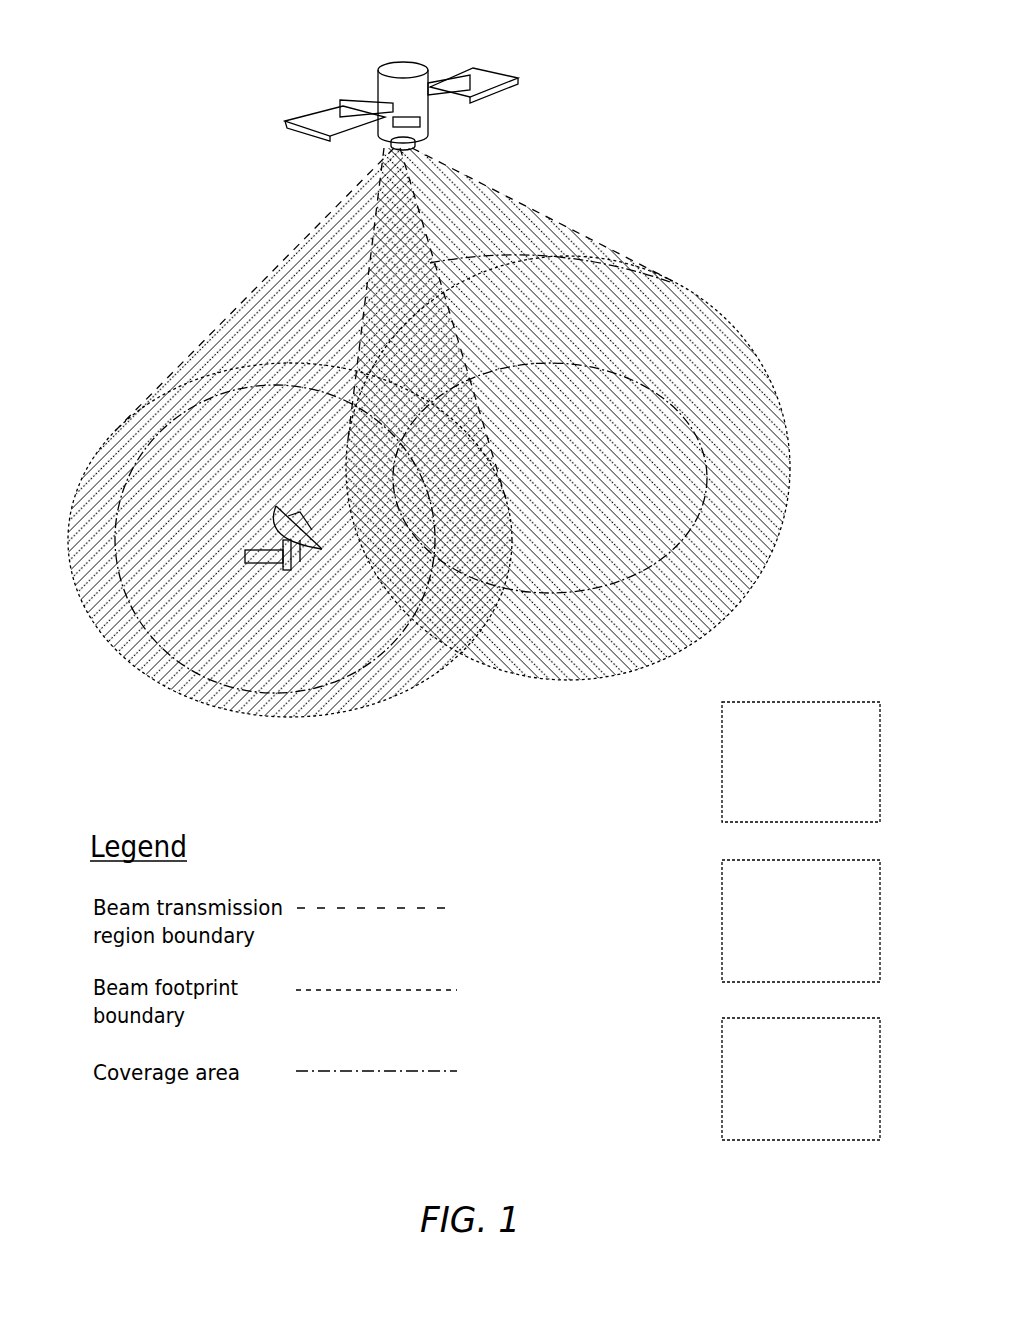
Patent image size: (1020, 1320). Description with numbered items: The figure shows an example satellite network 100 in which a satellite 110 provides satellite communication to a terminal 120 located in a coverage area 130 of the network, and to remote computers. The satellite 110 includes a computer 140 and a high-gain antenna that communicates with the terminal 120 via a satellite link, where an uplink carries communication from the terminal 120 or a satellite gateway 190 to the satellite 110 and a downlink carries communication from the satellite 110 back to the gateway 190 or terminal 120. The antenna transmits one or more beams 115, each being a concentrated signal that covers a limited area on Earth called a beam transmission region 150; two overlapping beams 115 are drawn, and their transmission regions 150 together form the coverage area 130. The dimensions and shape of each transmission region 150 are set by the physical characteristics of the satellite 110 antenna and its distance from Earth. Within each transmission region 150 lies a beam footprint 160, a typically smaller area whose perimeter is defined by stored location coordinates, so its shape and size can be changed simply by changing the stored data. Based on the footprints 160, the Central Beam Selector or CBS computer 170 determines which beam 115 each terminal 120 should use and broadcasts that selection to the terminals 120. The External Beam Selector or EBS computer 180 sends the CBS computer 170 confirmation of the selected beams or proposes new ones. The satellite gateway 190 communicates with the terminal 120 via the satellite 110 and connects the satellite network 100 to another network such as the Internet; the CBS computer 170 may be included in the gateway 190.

The satellite network 100 is at (738, 18).
The satellite 110 is at (393, 55).
The beam 115 is at (525, 192).
The terminal 120 is at (290, 520).
The coverage area 130 is at (670, 277).
The computer 140 is at (258, 557).
The beam transmission region 150 is at (765, 357).
The beam footprint 160 is at (725, 598).
The CBS computer 170 is at (783, 774).
The EBS computer 180 is at (783, 932).
The satellite gateway 190 is at (783, 1092).